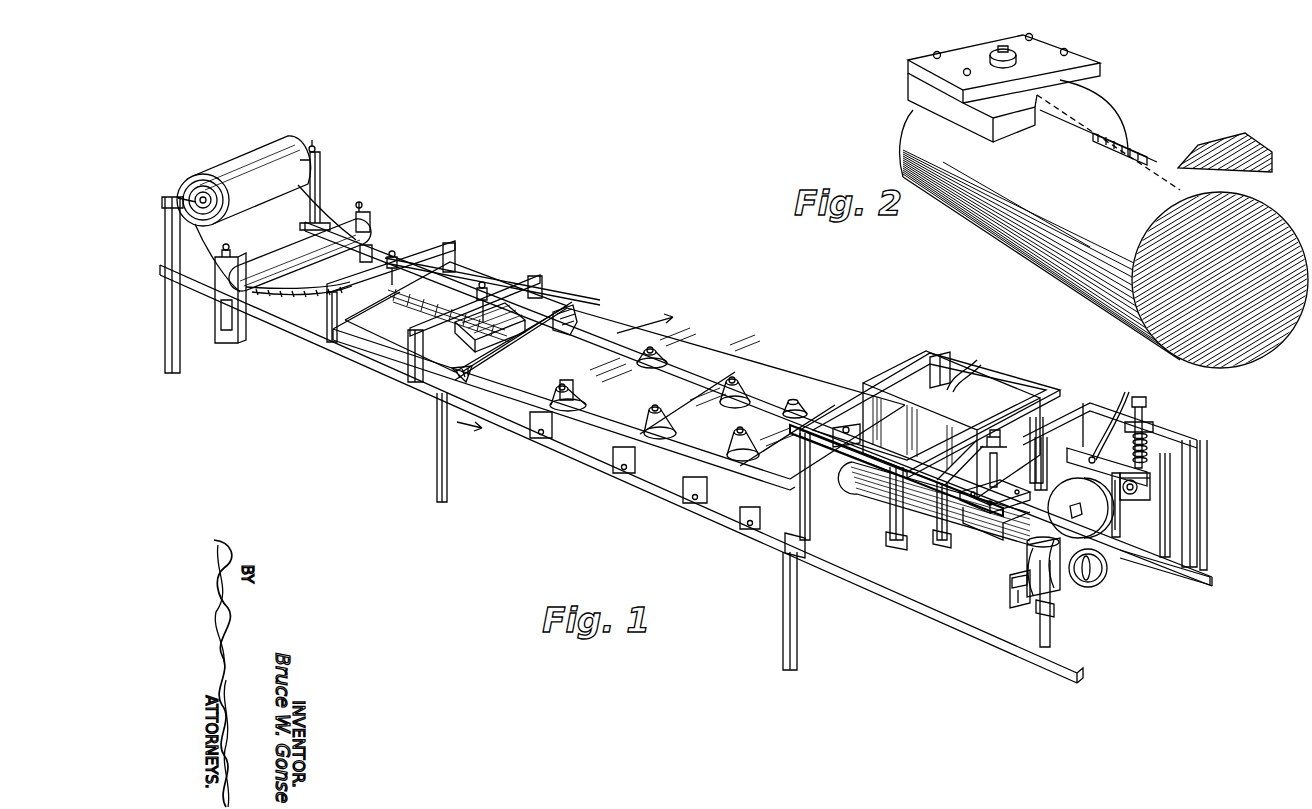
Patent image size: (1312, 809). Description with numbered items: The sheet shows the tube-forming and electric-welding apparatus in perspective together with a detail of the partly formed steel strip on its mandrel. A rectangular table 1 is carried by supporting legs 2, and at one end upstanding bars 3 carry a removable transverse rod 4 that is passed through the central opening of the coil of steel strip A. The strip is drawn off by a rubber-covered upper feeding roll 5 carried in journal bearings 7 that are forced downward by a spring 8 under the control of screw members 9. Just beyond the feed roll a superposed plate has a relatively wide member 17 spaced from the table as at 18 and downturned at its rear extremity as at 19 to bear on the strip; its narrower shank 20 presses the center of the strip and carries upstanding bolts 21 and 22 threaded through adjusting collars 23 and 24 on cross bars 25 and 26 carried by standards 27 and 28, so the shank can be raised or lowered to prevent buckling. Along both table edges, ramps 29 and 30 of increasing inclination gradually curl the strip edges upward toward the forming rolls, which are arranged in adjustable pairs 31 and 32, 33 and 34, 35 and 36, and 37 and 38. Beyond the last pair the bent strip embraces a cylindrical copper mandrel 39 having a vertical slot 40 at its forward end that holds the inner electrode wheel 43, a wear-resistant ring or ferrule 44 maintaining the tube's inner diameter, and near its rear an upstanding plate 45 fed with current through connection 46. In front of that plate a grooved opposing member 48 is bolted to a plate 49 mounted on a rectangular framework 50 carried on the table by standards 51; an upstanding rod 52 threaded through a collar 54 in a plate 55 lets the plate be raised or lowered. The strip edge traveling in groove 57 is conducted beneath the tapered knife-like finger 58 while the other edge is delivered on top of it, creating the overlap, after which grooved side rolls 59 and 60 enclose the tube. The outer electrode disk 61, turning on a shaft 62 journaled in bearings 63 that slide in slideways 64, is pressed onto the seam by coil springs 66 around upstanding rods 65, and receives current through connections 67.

In FIG. 1, the coil of steel strip A is at (241, 162).
In FIG. 1, the rectangular table 1 is at (587, 453).
In FIG. 1, the supporting legs 2 is at (449, 468).
In FIG. 1, the upstanding bars 3 is at (318, 183).
In FIG. 1, the transverse rod 4 is at (310, 152).
In FIG. 1, the upper feeding roll 5 is at (262, 264).
In FIG. 1, the journal bearings 7 is at (225, 287).
In FIG. 1, the spring 8 is at (576, 382).
In FIG. 1, the screw members 9 is at (367, 203).
In FIG. 1, the wide member of plate 17 is at (362, 253).
In FIG. 1, the spacing of plate from table 18 is at (410, 302).
In FIG. 1, the downturned rear extremity 19 is at (278, 296).
In FIG. 1, the shank 20 is at (445, 290).
In FIG. 1, the upstanding bolt 21 is at (383, 290).
In FIG. 1, the upstanding bolt 22 is at (470, 328).
In FIG. 1, the adjusting collar 23 is at (396, 260).
In FIG. 1, the adjusting collar 24 is at (488, 290).
In FIG. 1, the cross bar 25 is at (428, 250).
In FIG. 1, the cross bar 26 is at (540, 282).
In FIG. 1, the standard 27 is at (326, 318).
In FIG. 1, the standard 28 is at (425, 373).
In FIG. 1, the ramp 29 is at (403, 350).
In FIG. 1, the ramp 30 is at (570, 312).
In FIG. 1, the forming roll 31 is at (577, 403).
In FIG. 1, the forming roll 32 is at (673, 357).
In FIG. 1, the forming roll 33 is at (665, 422).
In FIG. 1, the forming roll 34 is at (732, 387).
In FIG. 1, the forming roll 35 is at (737, 457).
In FIG. 1, the forming roll 36 is at (798, 405).
In FIG. 1, the forming roll 37 is at (817, 473).
In FIG. 1, the forming roll 38 is at (845, 425).
In FIG. 1, the mandrel 39 is at (873, 487).
In FIG. 2, the mandrel 39 is at (1242, 333).
In FIG. 1, the vertical slot 40 is at (1097, 583).
In FIG. 1, the electrode wheel 43 is at (1100, 570).
In FIG. 1, the ring or ferrule 44 is at (1085, 577).
In FIG. 1, the upstanding plate 45 is at (880, 400).
In FIG. 1, the connection 46 is at (977, 364).
In FIG. 1, the opposing member 48 is at (993, 537).
In FIG. 2, the opposing member 48 is at (978, 122).
In FIG. 1, the plate 49 is at (965, 513).
In FIG. 2, the plate 49 is at (1082, 60).
In FIG. 1, the framework 50 is at (928, 362).
In FIG. 1, the standards 51 is at (940, 360).
In FIG. 1, the upstanding rod 52 is at (999, 470).
In FIG. 2, the upstanding rod 52 is at (1002, 48).
In FIG. 1, the collar 54 is at (992, 430).
In FIG. 1, the plate 55 is at (1043, 420).
In FIG. 2, the groove 57 is at (1027, 112).
In FIG. 1, the knife-like finger 58 is at (1013, 547).
In FIG. 2, the knife-like finger 58 is at (1128, 148).
In FIG. 2, the side roll 59 is at (1229, 158).
In FIG. 1, the side roll 60 is at (1042, 582).
In FIG. 1, the outer electrode disk 61 is at (1073, 487).
In FIG. 1, the shaft 62 is at (1150, 496).
In FIG. 1, the bearings 63 is at (1138, 486).
In FIG. 1, the slideways 64 is at (1152, 475).
In FIG. 1, the upstanding rods 65 is at (1150, 432).
In FIG. 1, the coil springs 66 is at (1170, 438).
In FIG. 1, the current connections 67 is at (1125, 400).